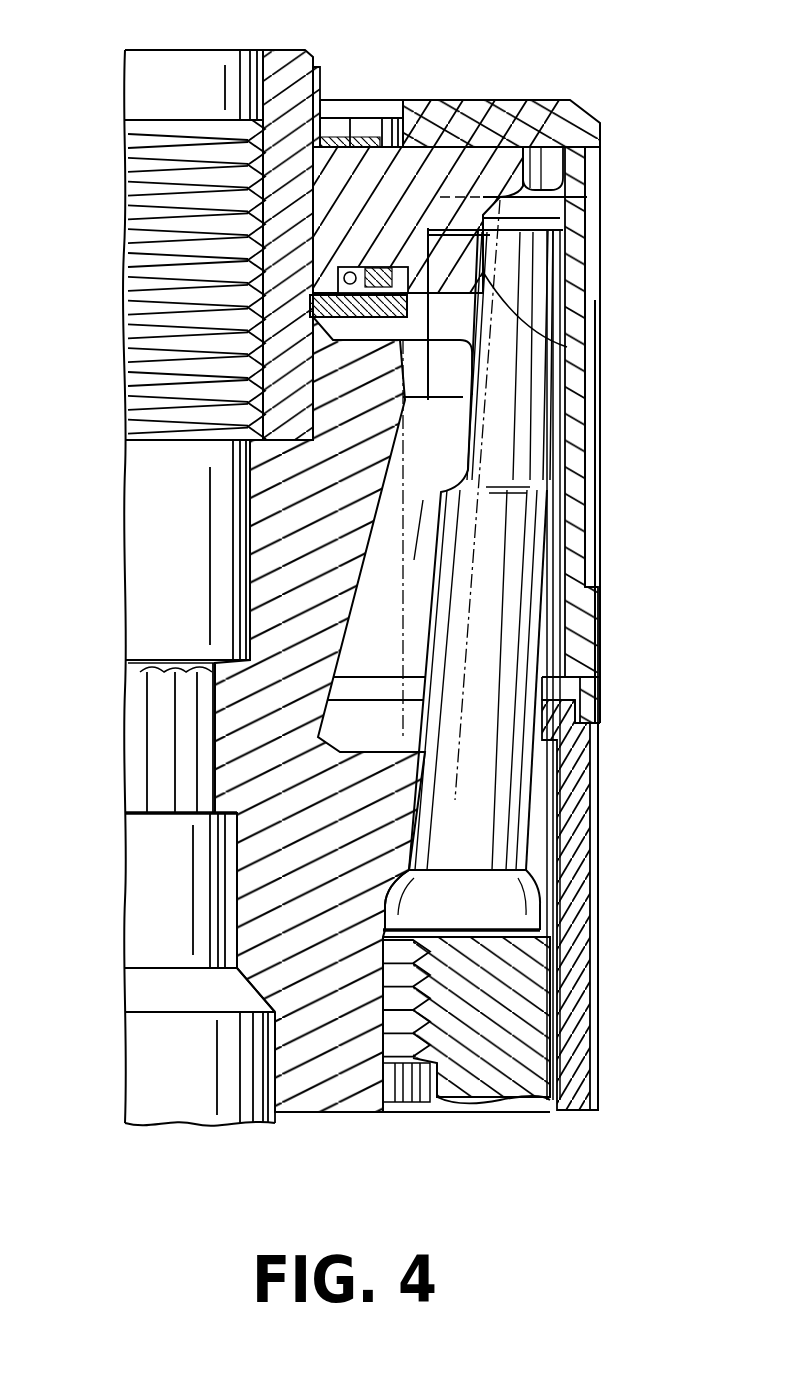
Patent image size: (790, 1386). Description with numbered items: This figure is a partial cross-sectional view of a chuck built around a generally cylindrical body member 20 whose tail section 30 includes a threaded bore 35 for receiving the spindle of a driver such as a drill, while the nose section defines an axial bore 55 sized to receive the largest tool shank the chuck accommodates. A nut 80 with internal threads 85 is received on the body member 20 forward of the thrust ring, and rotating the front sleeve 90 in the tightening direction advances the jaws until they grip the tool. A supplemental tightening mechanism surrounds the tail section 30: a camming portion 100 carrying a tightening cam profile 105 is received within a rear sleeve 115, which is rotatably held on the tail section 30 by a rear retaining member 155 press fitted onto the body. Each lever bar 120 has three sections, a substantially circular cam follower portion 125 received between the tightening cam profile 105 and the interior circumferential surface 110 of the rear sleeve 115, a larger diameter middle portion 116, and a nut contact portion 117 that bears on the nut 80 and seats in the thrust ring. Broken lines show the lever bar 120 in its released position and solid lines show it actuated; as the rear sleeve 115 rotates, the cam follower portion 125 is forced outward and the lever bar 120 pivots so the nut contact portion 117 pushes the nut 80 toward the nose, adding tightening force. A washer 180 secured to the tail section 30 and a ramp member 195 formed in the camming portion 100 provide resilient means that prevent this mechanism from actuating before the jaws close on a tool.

The body member 20 is at (258, 735).
The tail section 30 is at (281, 97).
The threaded bore 35 is at (207, 180).
The axial bore 55 is at (273, 1075).
The nut 80 is at (498, 1050).
The internal threads 85 is at (417, 1013).
The front sleeve 90 is at (598, 781).
The camming portion 100 is at (415, 203).
The tightening cam profile 105 is at (548, 364).
The interior circumferential surface 110 is at (567, 313).
The rear sleeve 115 is at (535, 130).
The middle portion 116 is at (527, 592).
The nut contact portion 117 is at (538, 862).
The lever bar 120 is at (482, 560).
The cam follower portion 125 is at (540, 250).
The rear retaining member 155 is at (327, 77).
The washer 180 is at (325, 318).
The ramp member 195 is at (352, 270).